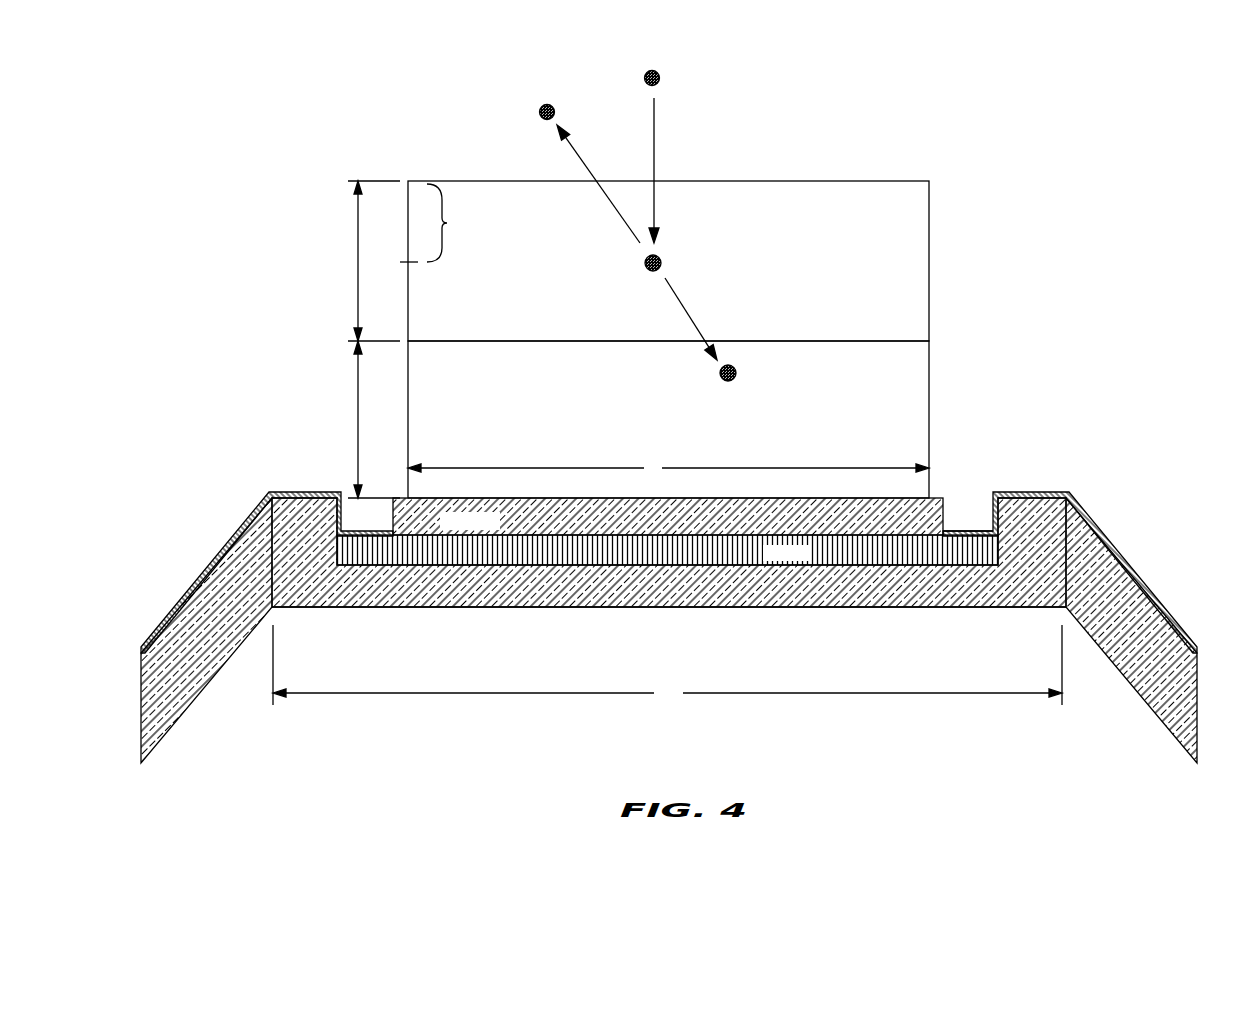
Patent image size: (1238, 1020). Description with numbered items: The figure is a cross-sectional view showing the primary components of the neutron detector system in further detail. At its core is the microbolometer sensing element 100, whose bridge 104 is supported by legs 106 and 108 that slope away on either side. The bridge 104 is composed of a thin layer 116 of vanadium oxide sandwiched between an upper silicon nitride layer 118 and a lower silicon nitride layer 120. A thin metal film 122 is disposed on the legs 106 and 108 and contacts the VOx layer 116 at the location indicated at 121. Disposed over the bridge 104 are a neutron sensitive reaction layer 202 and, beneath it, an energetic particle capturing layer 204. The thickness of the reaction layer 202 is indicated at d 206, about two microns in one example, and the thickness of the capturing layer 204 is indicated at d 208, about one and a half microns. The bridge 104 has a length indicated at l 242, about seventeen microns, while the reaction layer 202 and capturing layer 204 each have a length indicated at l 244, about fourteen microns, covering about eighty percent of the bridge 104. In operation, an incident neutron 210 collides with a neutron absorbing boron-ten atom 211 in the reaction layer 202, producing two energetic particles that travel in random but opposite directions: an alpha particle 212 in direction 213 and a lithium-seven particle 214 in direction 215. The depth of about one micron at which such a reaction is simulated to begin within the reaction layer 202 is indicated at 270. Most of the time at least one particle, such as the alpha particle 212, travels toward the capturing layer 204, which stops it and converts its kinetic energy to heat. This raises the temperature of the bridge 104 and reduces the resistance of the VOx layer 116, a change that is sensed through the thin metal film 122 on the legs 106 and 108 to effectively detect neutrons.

The microbolometer sensing element 100 is at (204, 314).
The bridge 104 is at (769, 624).
The leg 106 is at (1137, 693).
The leg 108 is at (224, 668).
The thin layer of vanadium oxide 116 is at (910, 553).
The silicon nitride layer 118 is at (946, 499).
The silicon nitride layer 120 is at (468, 600).
The contact of thin metal film with VOx layer 121 is at (983, 530).
The thin metal film 122 is at (215, 558).
The neutron sensitive reaction layer 202 is at (915, 256).
The energetic particle capturing layer 204 is at (920, 362).
The thickness d of neutron sensitive reaction layer 206 is at (349, 263).
The thickness d of energetic particle capturing layer 208 is at (349, 425).
The neutron 210 is at (645, 74).
The 10B atom 211 is at (644, 266).
The alpha particle 212 is at (718, 375).
The direction of alpha particle 213 is at (678, 300).
The 7Li particle 214 is at (538, 110).
The direction of 7Li particle 215 is at (614, 210).
The length l of bridge 242 is at (677, 700).
The length l of reaction and capturing layers 244 is at (663, 462).
The 1 μm depth in neutron sensitive layer 270 is at (450, 241).